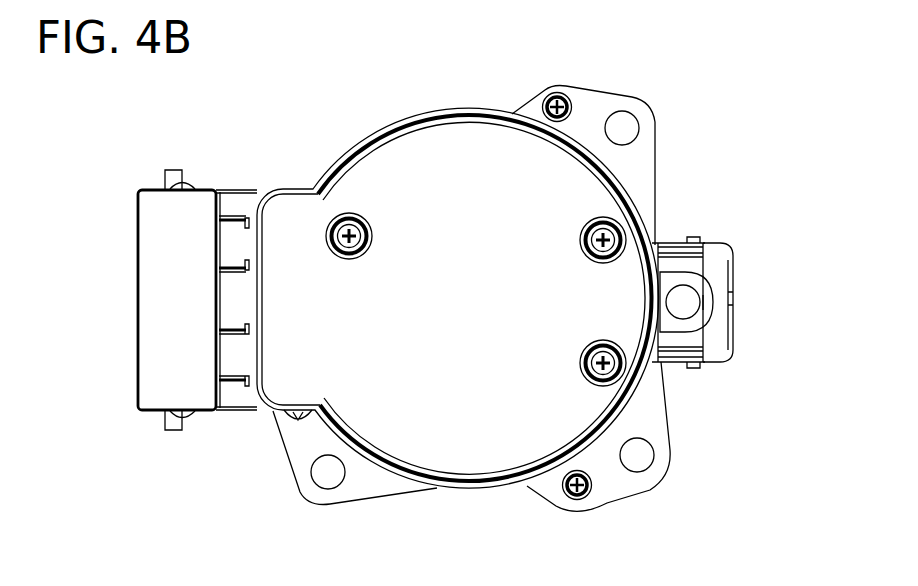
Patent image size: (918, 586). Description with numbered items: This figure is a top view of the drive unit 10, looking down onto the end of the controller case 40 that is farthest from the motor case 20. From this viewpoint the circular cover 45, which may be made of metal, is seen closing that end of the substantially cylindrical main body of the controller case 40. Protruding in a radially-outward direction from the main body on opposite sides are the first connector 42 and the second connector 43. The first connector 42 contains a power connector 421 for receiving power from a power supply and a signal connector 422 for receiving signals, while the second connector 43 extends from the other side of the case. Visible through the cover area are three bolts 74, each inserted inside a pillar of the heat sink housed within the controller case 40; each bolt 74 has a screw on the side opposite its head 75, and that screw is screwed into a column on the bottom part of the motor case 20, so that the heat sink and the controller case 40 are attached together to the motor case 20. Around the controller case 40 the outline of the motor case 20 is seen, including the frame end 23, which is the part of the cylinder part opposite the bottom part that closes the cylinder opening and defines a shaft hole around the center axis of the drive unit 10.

The drive unit 10 is at (624, 77).
The motor case 20 is at (443, 491).
The frame end 23 is at (293, 478).
The controller case 40 is at (417, 121).
The first connector 42 is at (136, 295).
The power connector 421 is at (136, 374).
The signal connector 422 is at (136, 235).
The second connector 43 is at (736, 330).
The cover 45 is at (460, 148).
The bolt 74 is at (326, 236).
The head 75 is at (328, 252).